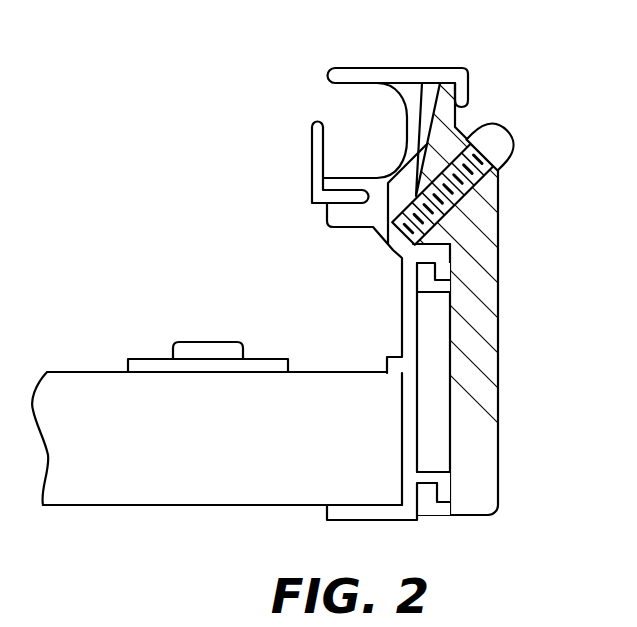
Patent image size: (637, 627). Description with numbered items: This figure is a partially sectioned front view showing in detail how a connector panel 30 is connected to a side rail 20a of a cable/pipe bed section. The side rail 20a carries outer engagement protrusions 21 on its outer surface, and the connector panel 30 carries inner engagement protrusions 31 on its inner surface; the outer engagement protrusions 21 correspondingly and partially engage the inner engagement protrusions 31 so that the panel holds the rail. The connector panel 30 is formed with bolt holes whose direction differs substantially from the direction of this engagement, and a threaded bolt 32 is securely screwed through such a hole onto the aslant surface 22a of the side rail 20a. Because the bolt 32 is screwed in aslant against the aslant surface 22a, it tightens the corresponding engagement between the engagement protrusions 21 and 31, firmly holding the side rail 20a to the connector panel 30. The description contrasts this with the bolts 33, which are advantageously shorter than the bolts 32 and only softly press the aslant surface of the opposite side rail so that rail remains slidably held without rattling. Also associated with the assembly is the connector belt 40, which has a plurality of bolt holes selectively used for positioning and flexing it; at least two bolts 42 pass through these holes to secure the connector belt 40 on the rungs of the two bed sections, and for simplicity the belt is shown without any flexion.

The side rail 20a is at (402, 345).
The outer engagement protrusion 21 is at (465, 98).
The aslant surface 22a is at (376, 250).
The connector panel 30 is at (503, 378).
The inner engagement protrusion 31 is at (452, 83).
The threaded bolt 32 is at (503, 145).
The bolt 33 is at (479, 179).
The connector belt 40 is at (145, 359).
The bolt 42 is at (208, 342).